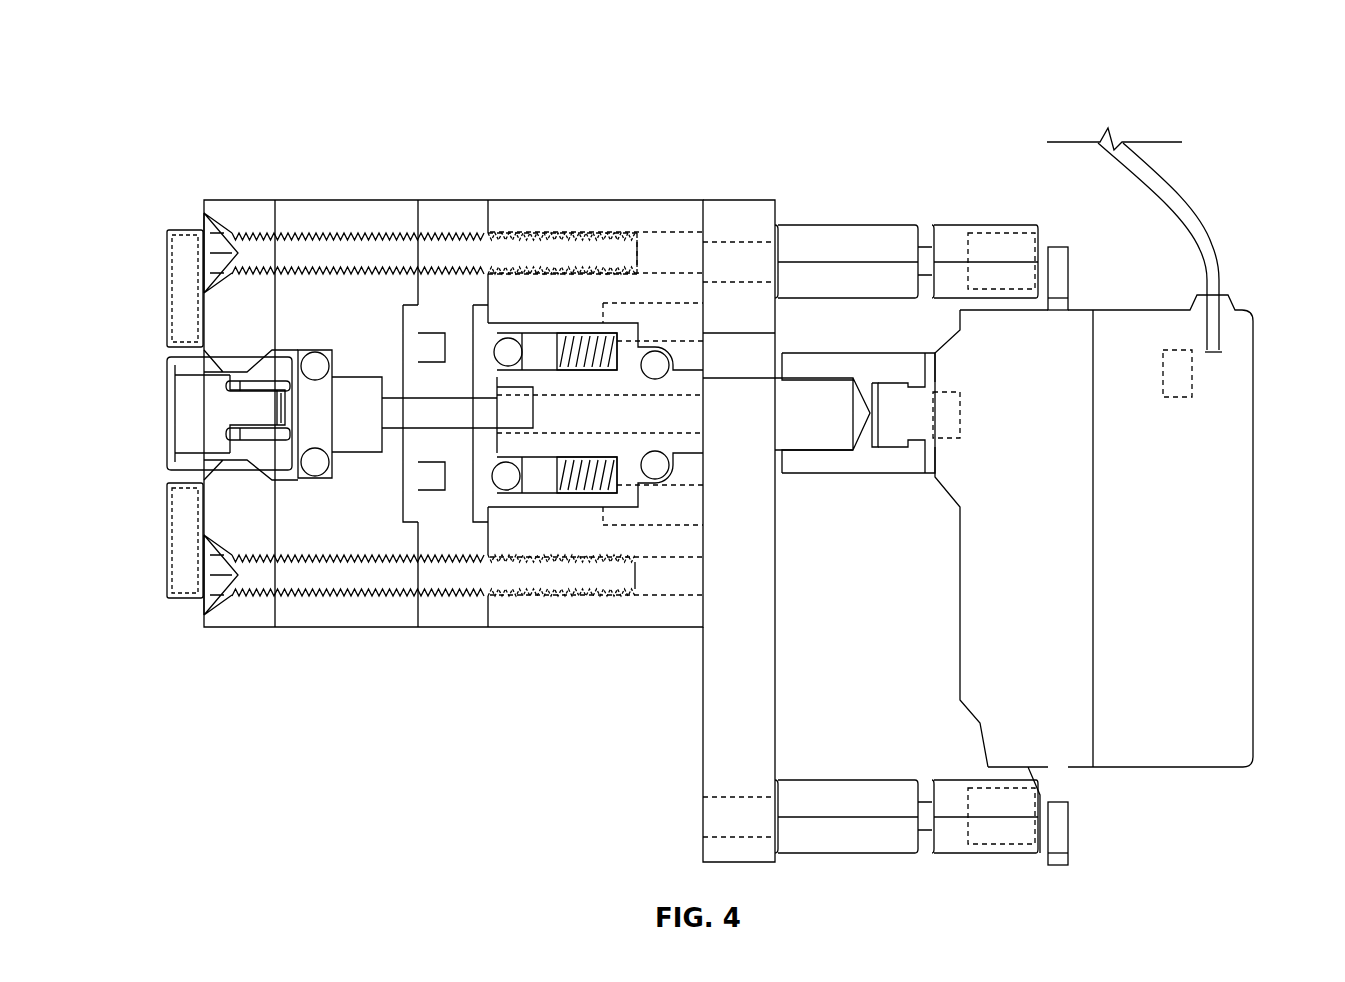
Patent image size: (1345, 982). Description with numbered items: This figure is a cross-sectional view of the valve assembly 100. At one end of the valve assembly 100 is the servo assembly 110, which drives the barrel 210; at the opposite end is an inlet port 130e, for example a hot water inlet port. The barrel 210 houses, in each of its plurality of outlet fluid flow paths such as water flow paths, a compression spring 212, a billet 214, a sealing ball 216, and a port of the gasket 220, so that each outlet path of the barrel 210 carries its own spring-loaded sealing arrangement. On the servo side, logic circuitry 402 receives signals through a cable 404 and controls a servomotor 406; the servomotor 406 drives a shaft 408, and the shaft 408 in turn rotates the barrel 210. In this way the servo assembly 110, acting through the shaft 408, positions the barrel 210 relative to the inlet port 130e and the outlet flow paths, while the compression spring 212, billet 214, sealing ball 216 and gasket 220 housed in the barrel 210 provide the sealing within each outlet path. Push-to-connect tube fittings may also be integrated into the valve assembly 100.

The valve assembly 100 is at (1230, 110).
The servo assembly 110 is at (1193, 516).
The inlet port 130e is at (158, 421).
The barrel 210 is at (792, 424).
The compression spring 212 is at (585, 340).
The billet 214 is at (543, 340).
The sealing ball 216 is at (500, 340).
The gasket 220 is at (473, 325).
The logic circuitry 402 is at (1170, 400).
The cable 404 is at (1212, 243).
The servomotor 406 is at (960, 420).
The shaft 408 is at (888, 450).